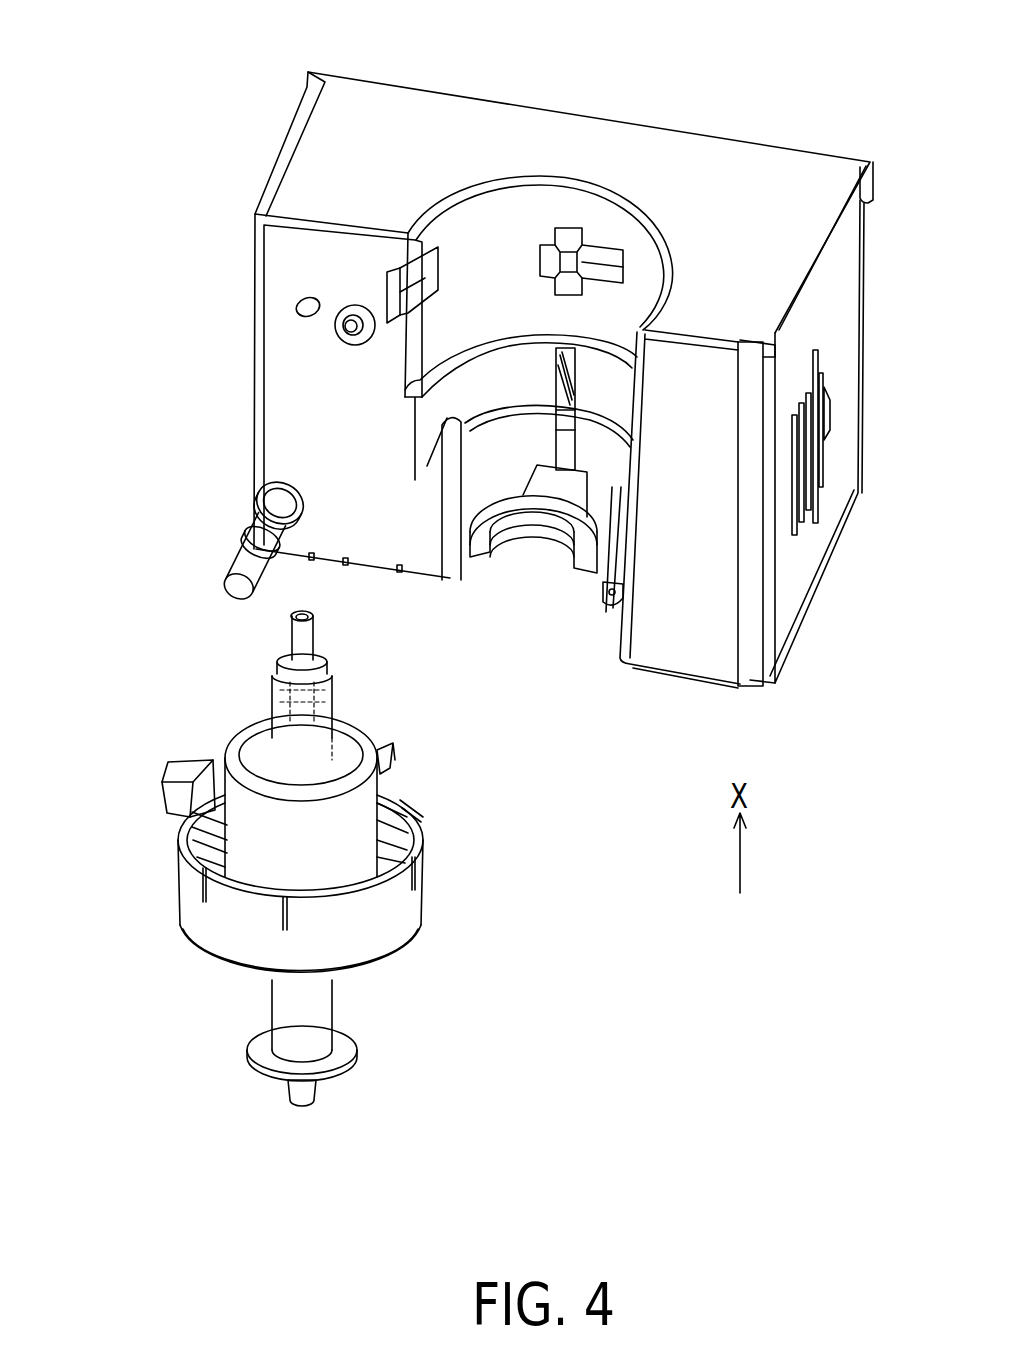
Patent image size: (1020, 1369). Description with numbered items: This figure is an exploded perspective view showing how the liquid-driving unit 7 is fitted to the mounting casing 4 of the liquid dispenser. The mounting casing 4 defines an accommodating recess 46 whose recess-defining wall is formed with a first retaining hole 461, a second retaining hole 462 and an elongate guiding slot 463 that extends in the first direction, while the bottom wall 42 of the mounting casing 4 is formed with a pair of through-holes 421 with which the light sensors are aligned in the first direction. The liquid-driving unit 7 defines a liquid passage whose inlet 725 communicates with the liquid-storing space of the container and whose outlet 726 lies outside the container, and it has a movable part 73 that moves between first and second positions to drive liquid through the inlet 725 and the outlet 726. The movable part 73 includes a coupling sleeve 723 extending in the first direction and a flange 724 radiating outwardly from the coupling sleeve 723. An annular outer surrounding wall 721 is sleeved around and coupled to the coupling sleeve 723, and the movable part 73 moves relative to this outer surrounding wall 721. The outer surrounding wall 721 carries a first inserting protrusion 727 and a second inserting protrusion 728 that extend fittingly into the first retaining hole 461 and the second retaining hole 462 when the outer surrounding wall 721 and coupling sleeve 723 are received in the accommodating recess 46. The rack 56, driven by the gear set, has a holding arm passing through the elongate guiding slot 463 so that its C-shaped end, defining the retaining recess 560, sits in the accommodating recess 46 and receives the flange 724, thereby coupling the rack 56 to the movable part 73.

The mounting casing 4 is at (748, 92).
The bottom wall 42 is at (433, 579).
The through-holes 421 is at (330, 558).
The accommodating recess 46 is at (472, 223).
The first retaining hole 461 is at (418, 297).
The second retaining hole 462 is at (595, 265).
The elongate guiding slot 463 is at (558, 398).
The rack 56 is at (533, 588).
The retaining recess 560 is at (485, 560).
The liquid-driving unit 7 is at (307, 888).
The outer surrounding wall 721 is at (218, 928).
The coupling sleeve 723 is at (285, 1013).
The flange 724 is at (255, 1045).
The inlet 725 is at (290, 618).
The outlet 726 is at (300, 1108).
The first inserting protrusion 727 is at (175, 795).
The second inserting protrusion 728 is at (395, 763).
The movable part 73 is at (278, 1072).